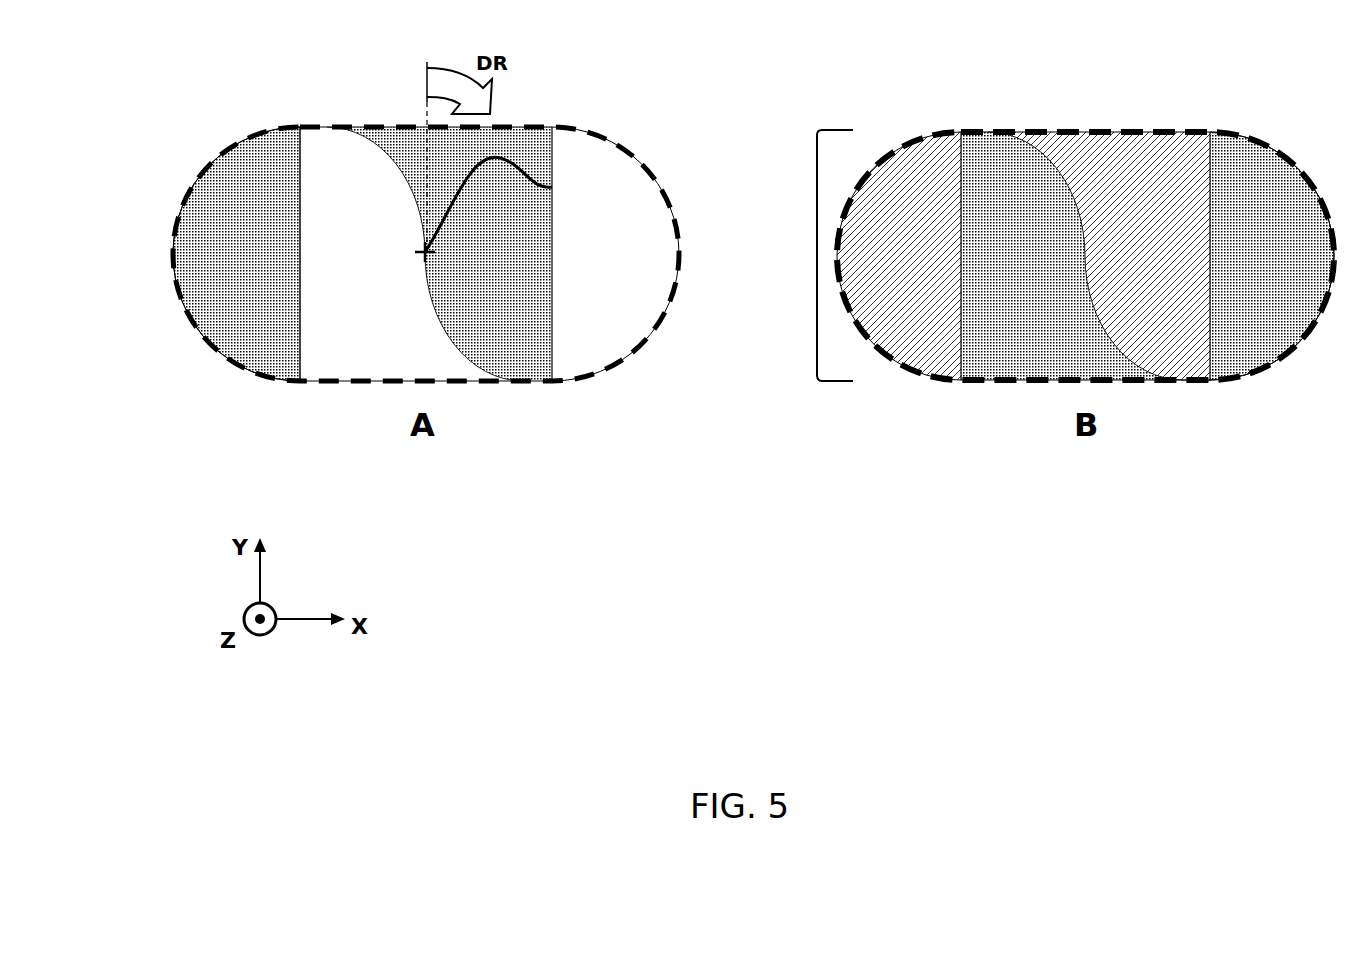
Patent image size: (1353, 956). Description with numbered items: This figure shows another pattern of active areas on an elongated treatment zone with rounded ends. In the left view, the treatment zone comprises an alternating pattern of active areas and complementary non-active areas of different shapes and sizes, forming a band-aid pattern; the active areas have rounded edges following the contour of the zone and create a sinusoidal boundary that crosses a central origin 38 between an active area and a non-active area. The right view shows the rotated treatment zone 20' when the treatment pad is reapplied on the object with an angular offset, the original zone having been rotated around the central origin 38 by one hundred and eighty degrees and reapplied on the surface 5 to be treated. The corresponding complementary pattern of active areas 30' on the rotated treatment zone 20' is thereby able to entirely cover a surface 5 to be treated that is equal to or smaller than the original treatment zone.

The surface to be treated 5 is at (817, 257).
The rotated treatment zone 20' is at (1085, 224).
The complementary pattern of active areas 30' is at (1272, 283).
The central origin 38 is at (554, 186).